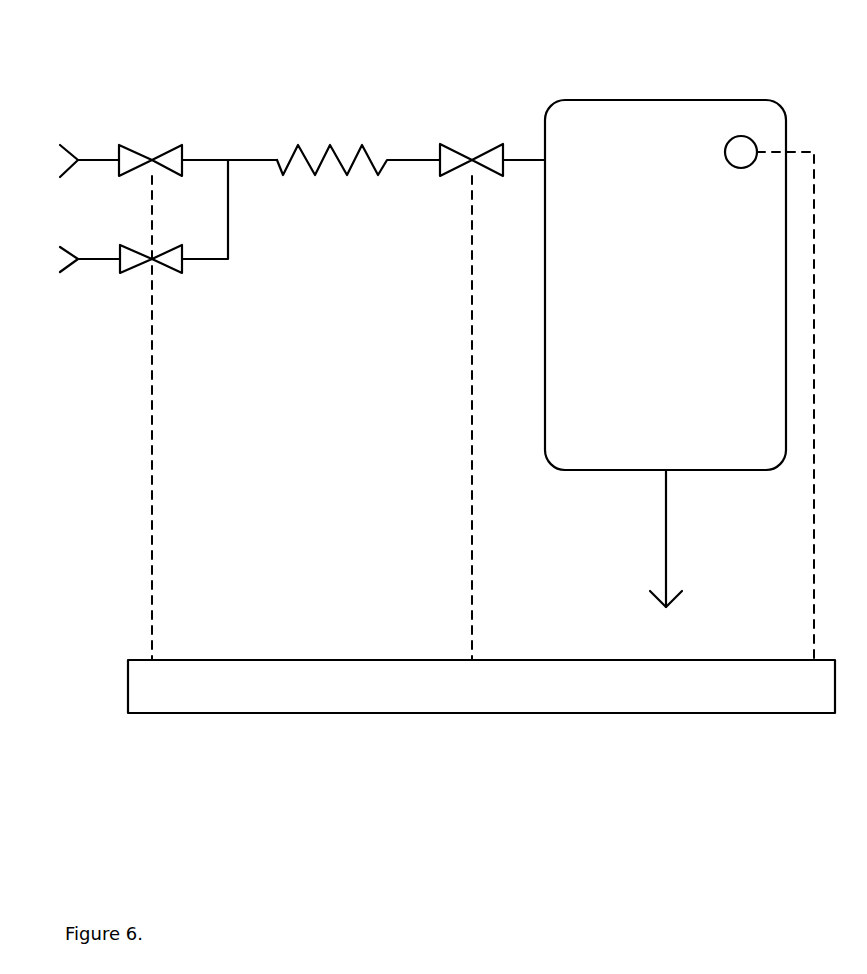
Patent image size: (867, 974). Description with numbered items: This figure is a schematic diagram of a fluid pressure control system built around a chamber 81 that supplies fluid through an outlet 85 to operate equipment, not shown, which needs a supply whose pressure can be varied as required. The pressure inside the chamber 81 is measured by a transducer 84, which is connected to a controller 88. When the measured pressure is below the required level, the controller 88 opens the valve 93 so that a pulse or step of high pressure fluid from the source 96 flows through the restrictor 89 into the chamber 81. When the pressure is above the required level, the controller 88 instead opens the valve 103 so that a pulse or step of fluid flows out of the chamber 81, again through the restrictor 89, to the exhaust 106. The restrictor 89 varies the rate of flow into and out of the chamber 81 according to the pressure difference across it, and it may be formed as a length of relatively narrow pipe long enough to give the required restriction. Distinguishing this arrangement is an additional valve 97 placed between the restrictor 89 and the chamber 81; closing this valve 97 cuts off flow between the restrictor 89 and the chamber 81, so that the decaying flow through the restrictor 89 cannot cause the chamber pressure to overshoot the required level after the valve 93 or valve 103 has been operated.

The chamber 81 is at (637, 125).
The transducer 84 is at (737, 150).
The outlet 85 is at (655, 635).
The controller 88 is at (268, 685).
The restrictor 89 is at (310, 158).
The valve 93 is at (132, 158).
The source 96 is at (53, 170).
The additional valve 97 is at (448, 155).
The valve 103 is at (128, 272).
The exhaust 106 is at (56, 269).